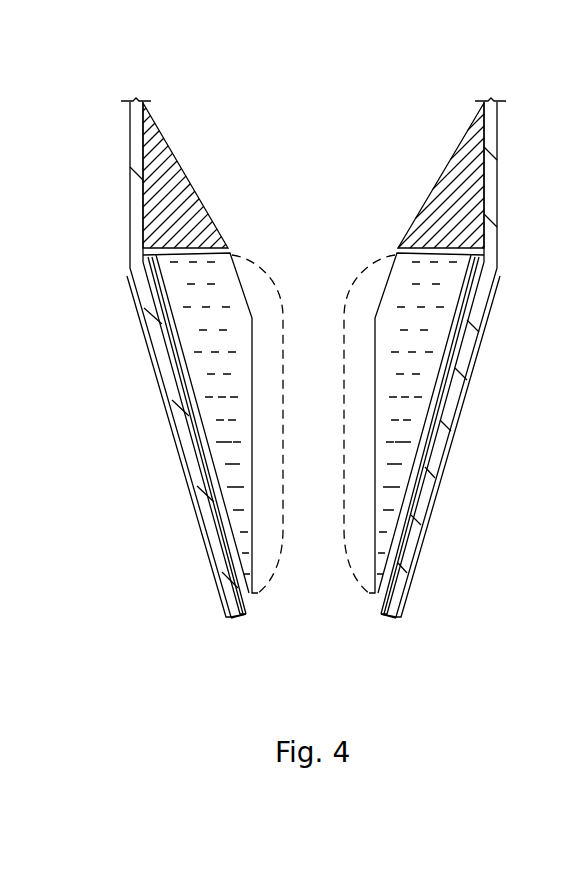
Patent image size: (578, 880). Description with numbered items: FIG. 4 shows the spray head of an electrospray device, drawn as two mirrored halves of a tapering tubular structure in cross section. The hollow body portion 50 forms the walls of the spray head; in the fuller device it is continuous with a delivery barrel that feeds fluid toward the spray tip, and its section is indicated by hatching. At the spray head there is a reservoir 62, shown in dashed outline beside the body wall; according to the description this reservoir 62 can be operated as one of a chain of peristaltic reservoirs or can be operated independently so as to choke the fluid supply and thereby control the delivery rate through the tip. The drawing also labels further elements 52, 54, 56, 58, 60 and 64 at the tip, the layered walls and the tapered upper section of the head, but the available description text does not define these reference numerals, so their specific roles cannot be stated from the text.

The hollow body portion 50 is at (140, 239).
The distal end of tube 52 is at (388, 620).
The outer layer 54 is at (178, 448).
The inner liner 56 is at (220, 509).
The fluid filled lumen 58 is at (197, 342).
The tapered wall section 60 is at (178, 196).
The reservoir 62 is at (243, 290).
The insertion direction / expanded region 64 is at (368, 272).